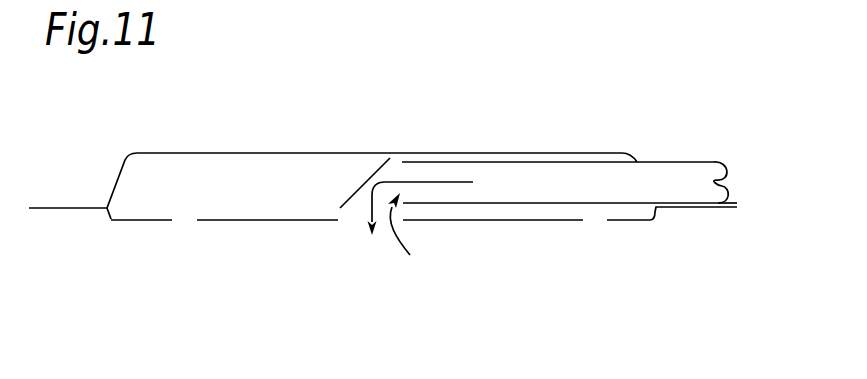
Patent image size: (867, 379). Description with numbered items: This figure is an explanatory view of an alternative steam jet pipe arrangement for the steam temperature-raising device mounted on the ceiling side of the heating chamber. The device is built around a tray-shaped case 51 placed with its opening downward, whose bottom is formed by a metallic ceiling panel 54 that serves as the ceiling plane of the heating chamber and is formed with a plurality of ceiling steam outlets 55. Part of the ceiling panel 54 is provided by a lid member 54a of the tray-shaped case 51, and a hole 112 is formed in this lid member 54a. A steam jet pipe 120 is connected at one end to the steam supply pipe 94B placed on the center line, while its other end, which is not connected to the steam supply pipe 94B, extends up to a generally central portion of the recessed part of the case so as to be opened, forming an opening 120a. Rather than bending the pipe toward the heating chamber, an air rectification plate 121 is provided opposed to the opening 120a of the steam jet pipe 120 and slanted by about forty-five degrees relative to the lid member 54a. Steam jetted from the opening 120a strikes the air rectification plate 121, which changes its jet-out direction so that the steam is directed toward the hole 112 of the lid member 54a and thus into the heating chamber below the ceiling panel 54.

The tray-shaped case 51 is at (183, 153).
The ceiling panel 54 is at (90, 210).
The lid member 54a is at (267, 220).
The ceiling steam outlets 55 is at (185, 236).
The hole 112 is at (347, 236).
The steam jet pipe 120 is at (523, 160).
The opening 120a is at (420, 240).
The air rectification plate 121 is at (363, 182).
The steam supply pipe 94B is at (670, 160).